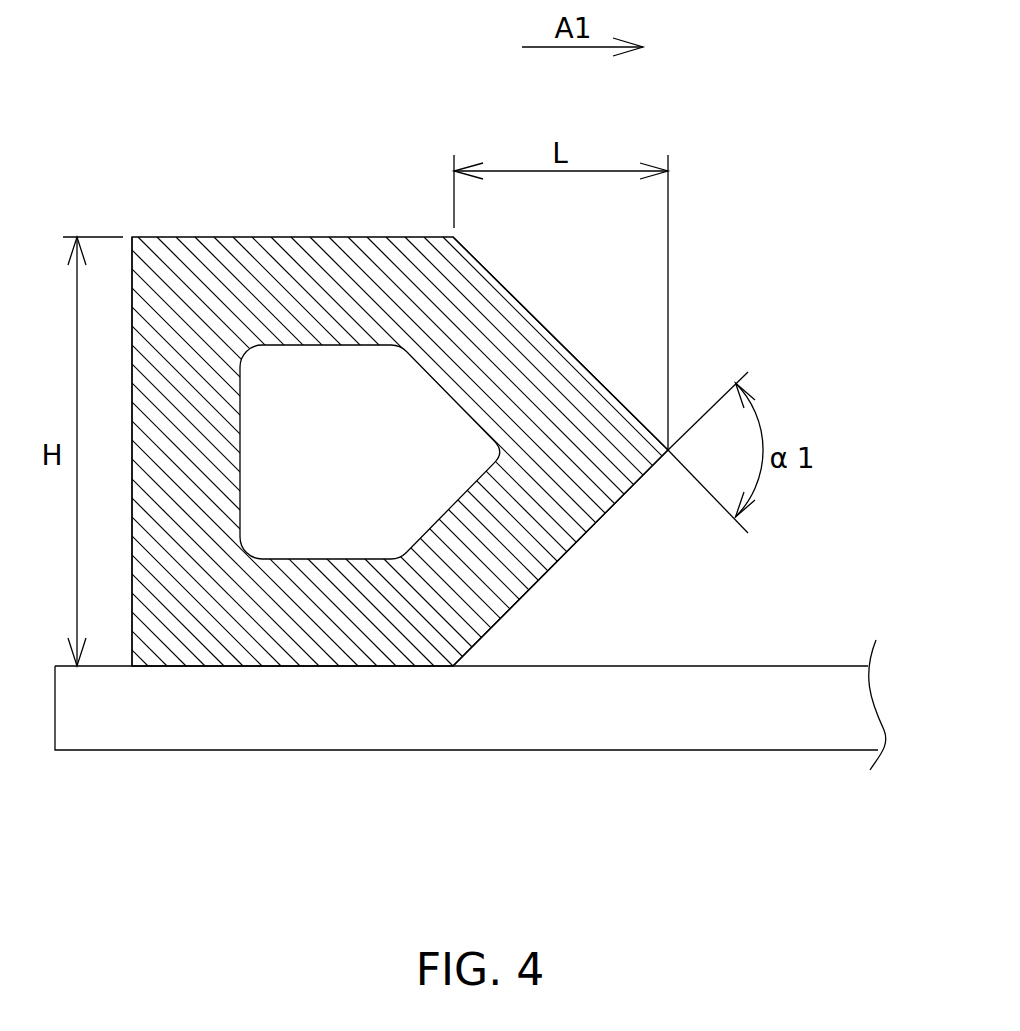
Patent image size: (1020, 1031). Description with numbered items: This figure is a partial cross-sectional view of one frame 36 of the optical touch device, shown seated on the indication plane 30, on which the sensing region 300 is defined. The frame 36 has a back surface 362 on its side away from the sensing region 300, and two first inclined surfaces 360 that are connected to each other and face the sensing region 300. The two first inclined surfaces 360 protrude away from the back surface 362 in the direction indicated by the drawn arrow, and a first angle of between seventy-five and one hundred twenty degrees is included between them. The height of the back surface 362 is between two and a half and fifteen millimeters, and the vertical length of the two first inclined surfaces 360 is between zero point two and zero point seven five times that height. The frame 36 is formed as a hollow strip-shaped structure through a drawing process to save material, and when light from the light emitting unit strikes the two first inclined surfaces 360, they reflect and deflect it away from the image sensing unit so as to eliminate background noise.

The frame 36 is at (246, 155).
The back surface 362 is at (132, 269).
The first inclined surfaces 360 is at (562, 342).
The sensing region 300 is at (762, 666).
The indication plane 30 is at (623, 733).